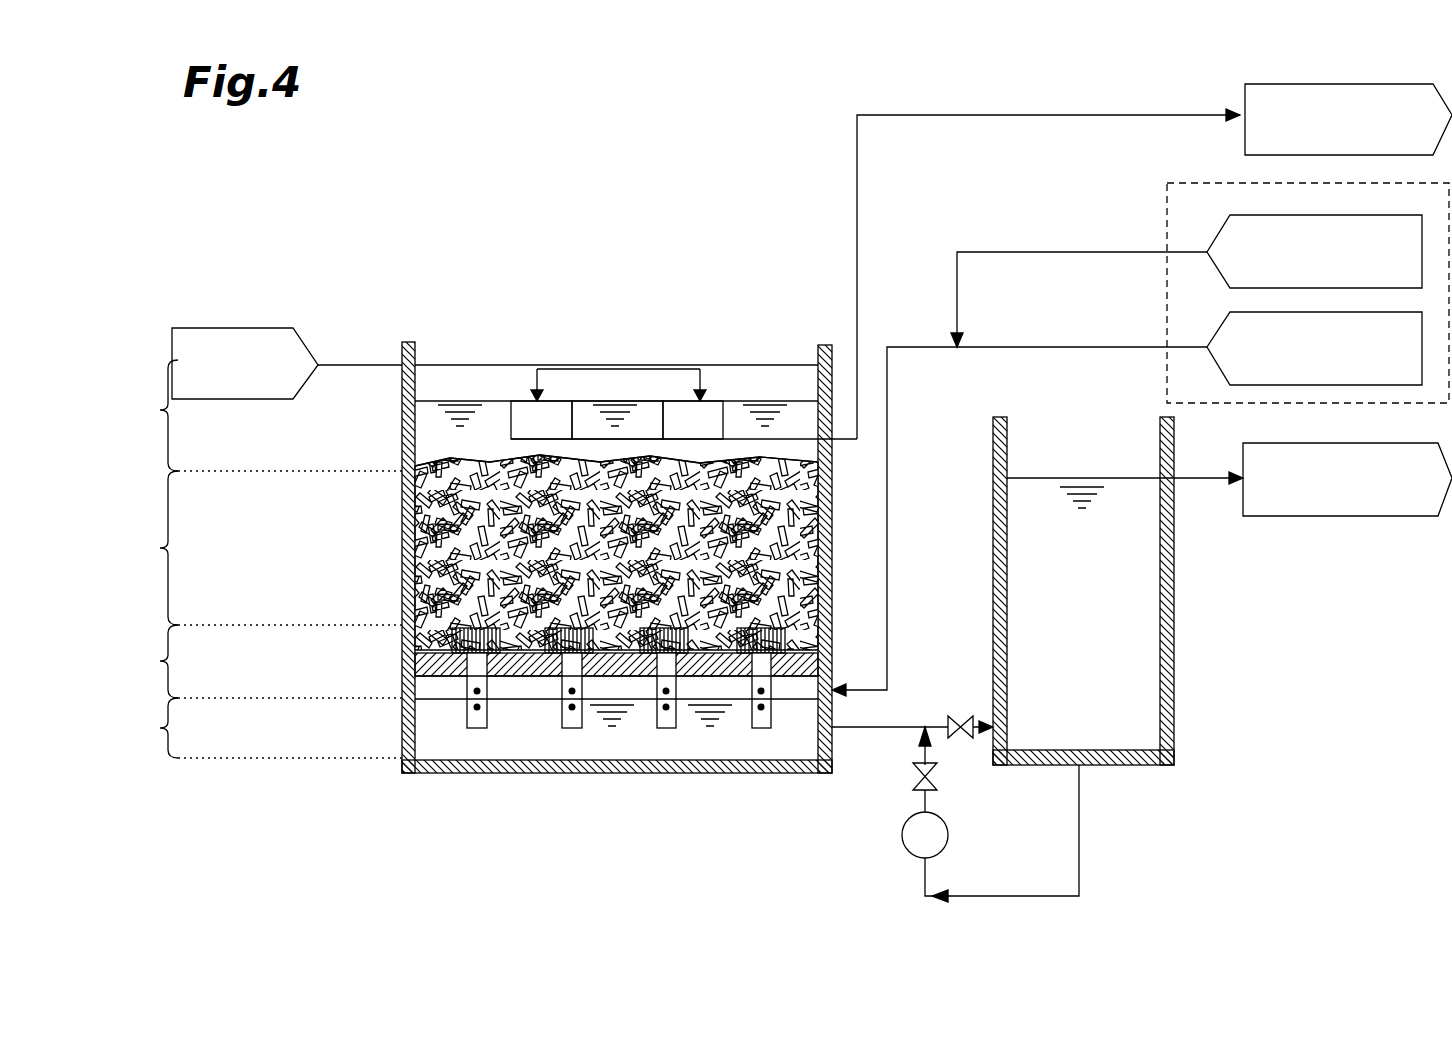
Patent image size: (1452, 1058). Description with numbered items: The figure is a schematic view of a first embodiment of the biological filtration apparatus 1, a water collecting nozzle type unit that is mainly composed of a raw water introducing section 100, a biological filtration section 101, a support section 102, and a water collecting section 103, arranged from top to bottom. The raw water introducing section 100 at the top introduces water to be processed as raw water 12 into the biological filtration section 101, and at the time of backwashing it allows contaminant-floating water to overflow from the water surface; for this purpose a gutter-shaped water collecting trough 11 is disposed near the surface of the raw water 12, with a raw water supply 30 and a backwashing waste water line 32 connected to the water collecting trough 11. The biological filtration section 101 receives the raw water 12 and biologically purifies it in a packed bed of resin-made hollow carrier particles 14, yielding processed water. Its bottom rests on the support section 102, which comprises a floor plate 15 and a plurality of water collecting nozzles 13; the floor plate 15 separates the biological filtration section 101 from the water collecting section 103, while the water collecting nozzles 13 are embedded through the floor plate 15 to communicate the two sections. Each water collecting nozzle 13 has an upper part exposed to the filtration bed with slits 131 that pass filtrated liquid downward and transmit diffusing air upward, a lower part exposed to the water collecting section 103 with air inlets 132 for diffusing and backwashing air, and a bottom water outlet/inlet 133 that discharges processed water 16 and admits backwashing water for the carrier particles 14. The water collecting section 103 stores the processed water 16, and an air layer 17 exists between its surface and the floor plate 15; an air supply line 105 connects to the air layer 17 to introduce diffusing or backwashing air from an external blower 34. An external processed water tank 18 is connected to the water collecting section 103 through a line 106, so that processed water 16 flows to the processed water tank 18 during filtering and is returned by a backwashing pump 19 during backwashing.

The biological filtration apparatus 1 is at (395, 588).
The water collecting trough 11 is at (520, 420).
The raw water 12 is at (453, 450).
The water collecting nozzle 13 is at (458, 684).
The hollow carrier particles 14 is at (430, 545).
The floor plate 15 is at (416, 670).
The processed water 16 is at (630, 745).
The air layer 17 is at (520, 687).
The processed water tank 18 is at (1174, 603).
The backwashing pump 19 is at (903, 840).
The raw water supply 30 is at (253, 328).
The backwashing waste water line 32 is at (857, 205).
The blower 34 is at (1167, 196).
The raw water introducing section 100 is at (259, 415).
The biological filtration section 101 is at (259, 548).
The support section 102 is at (259, 661).
The water collecting section 103 is at (259, 728).
The air supply line 105 is at (887, 555).
The line 106 is at (865, 727).
The slits 131 is at (415, 654).
The air inlets 132 is at (470, 690).
The water outlet/inlet 133 is at (477, 728).